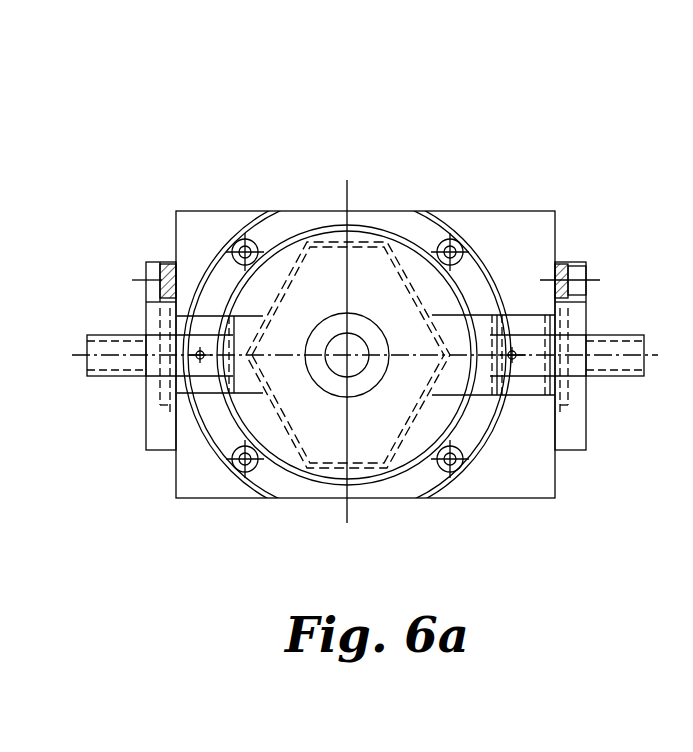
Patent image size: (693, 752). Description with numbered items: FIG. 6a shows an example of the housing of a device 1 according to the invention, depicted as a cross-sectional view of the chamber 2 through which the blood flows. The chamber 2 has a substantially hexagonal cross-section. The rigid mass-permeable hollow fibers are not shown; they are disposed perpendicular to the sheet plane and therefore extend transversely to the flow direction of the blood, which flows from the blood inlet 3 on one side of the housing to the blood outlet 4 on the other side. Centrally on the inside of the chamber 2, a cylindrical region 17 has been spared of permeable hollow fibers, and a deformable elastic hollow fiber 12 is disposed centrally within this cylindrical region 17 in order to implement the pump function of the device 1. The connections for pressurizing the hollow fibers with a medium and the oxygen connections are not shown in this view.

The gear unit 1 is at (488, 163).
The chamber 2 is at (363, 429).
The blood inlet 3 is at (618, 335).
The blood outlet 4 is at (115, 335).
The deformable elastic hollow fiber 12 is at (350, 377).
The cylindrical region 17 is at (347, 313).